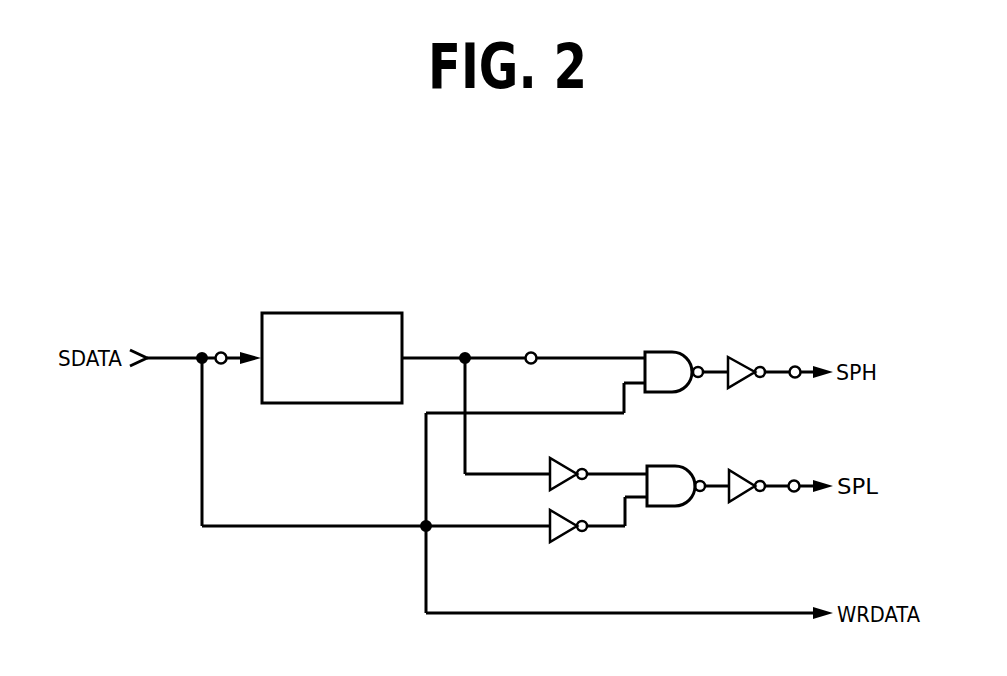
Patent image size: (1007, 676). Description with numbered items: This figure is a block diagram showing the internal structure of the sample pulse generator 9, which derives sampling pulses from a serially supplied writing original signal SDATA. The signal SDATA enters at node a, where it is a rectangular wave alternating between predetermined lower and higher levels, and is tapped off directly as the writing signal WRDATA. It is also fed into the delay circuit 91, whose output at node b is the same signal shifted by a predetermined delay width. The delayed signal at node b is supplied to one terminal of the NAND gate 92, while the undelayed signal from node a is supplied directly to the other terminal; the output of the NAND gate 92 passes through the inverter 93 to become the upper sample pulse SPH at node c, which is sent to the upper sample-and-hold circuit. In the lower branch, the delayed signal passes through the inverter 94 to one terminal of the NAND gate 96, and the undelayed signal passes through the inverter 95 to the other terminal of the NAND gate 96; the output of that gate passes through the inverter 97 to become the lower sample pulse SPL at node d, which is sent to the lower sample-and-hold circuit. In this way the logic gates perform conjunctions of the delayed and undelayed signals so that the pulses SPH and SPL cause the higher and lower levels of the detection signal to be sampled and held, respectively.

The sample pulse generator 9 is at (323, 637).
The delay circuit 91 is at (372, 313).
The NAND gate 92 is at (672, 352).
The inverter 93 is at (750, 357).
The inverter 94 is at (583, 455).
The inverter 95 is at (563, 531).
The NAND gate 96 is at (677, 466).
The inverter 97 is at (748, 470).
The writing original signal waveform point a is at (220, 352).
The delayed signal waveform point b is at (532, 352).
The upper sample pulse waveform point c is at (797, 366).
The lower sample pulse waveform point d is at (794, 492).